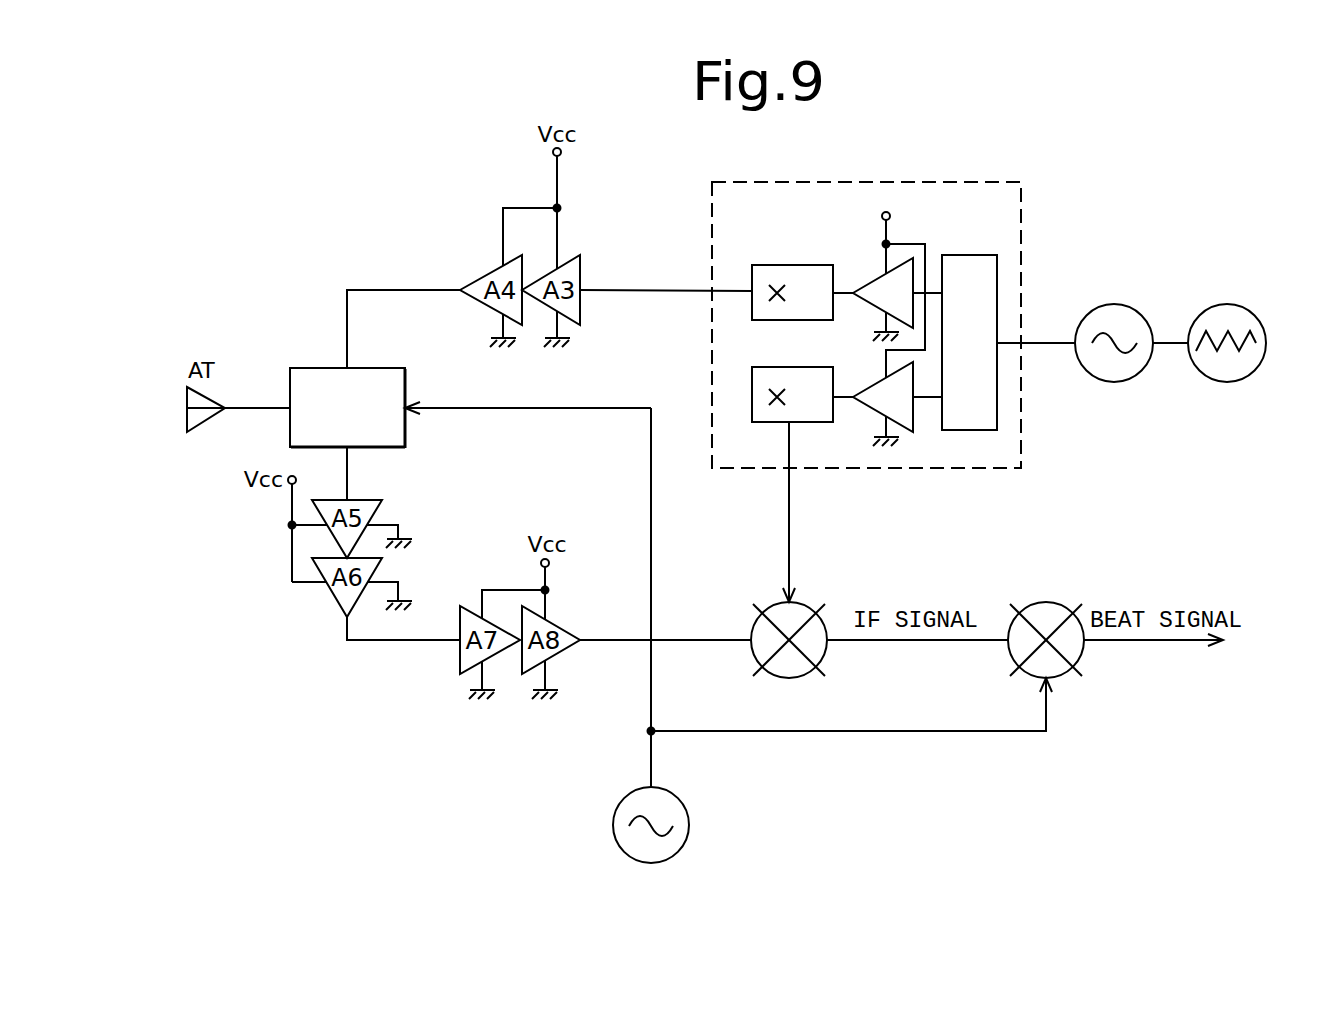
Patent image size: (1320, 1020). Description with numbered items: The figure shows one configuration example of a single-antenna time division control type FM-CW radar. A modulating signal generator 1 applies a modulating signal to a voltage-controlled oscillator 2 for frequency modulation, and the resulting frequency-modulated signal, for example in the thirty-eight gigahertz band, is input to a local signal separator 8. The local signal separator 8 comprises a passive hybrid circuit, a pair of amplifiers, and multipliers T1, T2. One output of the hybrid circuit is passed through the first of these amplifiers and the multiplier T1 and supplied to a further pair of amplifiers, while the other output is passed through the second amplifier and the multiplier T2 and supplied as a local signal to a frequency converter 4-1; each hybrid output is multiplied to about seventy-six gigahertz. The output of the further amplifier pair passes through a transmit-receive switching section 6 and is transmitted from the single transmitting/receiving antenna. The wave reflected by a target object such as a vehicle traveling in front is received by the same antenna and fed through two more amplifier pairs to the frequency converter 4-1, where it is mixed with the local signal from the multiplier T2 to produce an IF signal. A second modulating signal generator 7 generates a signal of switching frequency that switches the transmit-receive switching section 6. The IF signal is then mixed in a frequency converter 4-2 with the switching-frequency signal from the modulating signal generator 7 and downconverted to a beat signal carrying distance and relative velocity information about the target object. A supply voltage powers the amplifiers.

The modulating signal generator 1 is at (1242, 307).
The voltage-controlled oscillator 2 is at (1128, 307).
The frequency converter 4-1 is at (805, 678).
The frequency converter 4-2 is at (1082, 657).
The transmit-receive switching section 6 is at (383, 368).
The modulating signal generator 7 is at (684, 805).
The local signal separator 8 is at (985, 182).
The multiplier T1 is at (806, 265).
The multiplier T2 is at (794, 367).